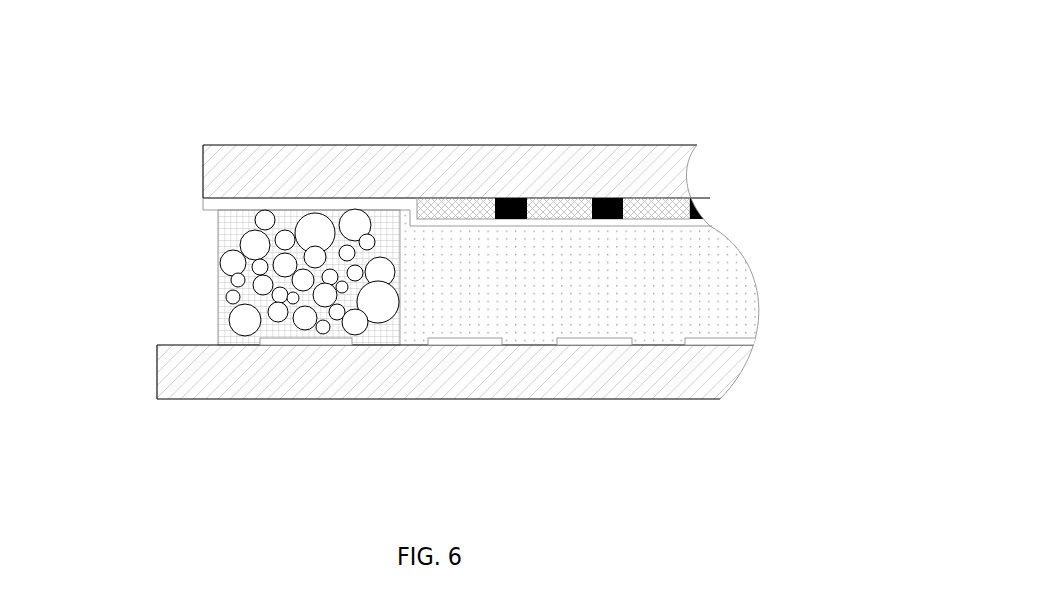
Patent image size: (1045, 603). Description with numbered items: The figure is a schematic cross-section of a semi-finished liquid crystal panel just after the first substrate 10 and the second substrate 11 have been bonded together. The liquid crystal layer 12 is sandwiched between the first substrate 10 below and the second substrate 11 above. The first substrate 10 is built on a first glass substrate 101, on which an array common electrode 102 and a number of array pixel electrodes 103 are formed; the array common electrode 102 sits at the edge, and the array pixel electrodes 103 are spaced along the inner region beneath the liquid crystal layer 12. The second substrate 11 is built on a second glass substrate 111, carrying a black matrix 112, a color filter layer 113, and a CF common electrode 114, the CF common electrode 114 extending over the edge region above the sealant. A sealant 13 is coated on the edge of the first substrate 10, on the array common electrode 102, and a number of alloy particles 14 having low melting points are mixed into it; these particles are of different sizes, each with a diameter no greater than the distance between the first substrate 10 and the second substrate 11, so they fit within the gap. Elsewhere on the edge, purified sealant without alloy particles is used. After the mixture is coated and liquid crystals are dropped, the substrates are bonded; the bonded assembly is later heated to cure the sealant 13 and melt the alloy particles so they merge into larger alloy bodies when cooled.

The first substrate 10 is at (446, 415).
The second substrate 11 is at (439, 146).
The liquid crystal layer 12 is at (678, 277).
The sealant 13 is at (220, 282).
The spacer balls 14 is at (327, 227).
The first glass substrate 101 is at (562, 375).
The array common electrode 102 is at (318, 340).
The array pixel electrodes 103 is at (467, 341).
The second glass substrate 111 is at (570, 167).
The black matrix 112 is at (630, 200).
The color filter layer 113 is at (465, 207).
The CF common electrode 114 is at (260, 202).